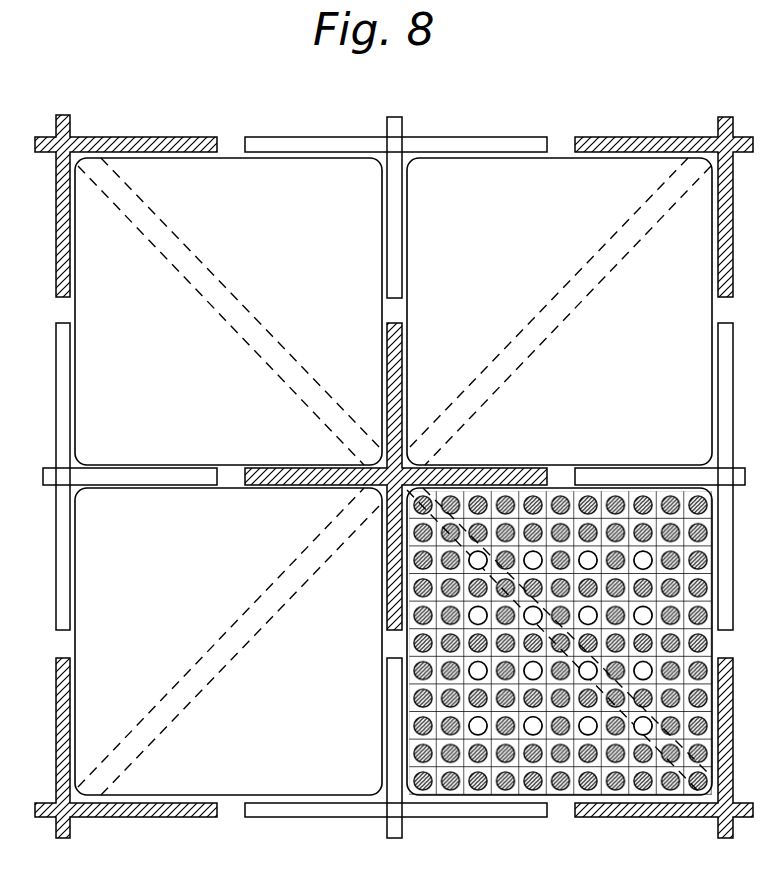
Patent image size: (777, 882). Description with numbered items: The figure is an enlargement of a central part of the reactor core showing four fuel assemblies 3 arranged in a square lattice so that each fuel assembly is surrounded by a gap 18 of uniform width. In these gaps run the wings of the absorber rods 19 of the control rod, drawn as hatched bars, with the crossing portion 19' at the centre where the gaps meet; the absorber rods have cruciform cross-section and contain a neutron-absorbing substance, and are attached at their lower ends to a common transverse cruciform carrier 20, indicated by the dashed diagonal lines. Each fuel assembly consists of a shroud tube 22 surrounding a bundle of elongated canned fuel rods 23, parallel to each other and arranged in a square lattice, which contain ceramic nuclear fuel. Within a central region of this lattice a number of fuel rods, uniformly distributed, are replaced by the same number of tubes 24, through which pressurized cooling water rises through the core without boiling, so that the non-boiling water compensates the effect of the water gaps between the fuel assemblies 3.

The fuel assembly 3 is at (233, 152).
The gap 18 is at (391, 310).
The absorber rod 19 is at (394, 478).
The central hatched cross bar 19' is at (396, 476).
The cruciform carrier 20 is at (247, 323).
The shroud tube 22 is at (297, 160).
The fuel rod 23 is at (416, 669).
The tube 24 is at (526, 720).